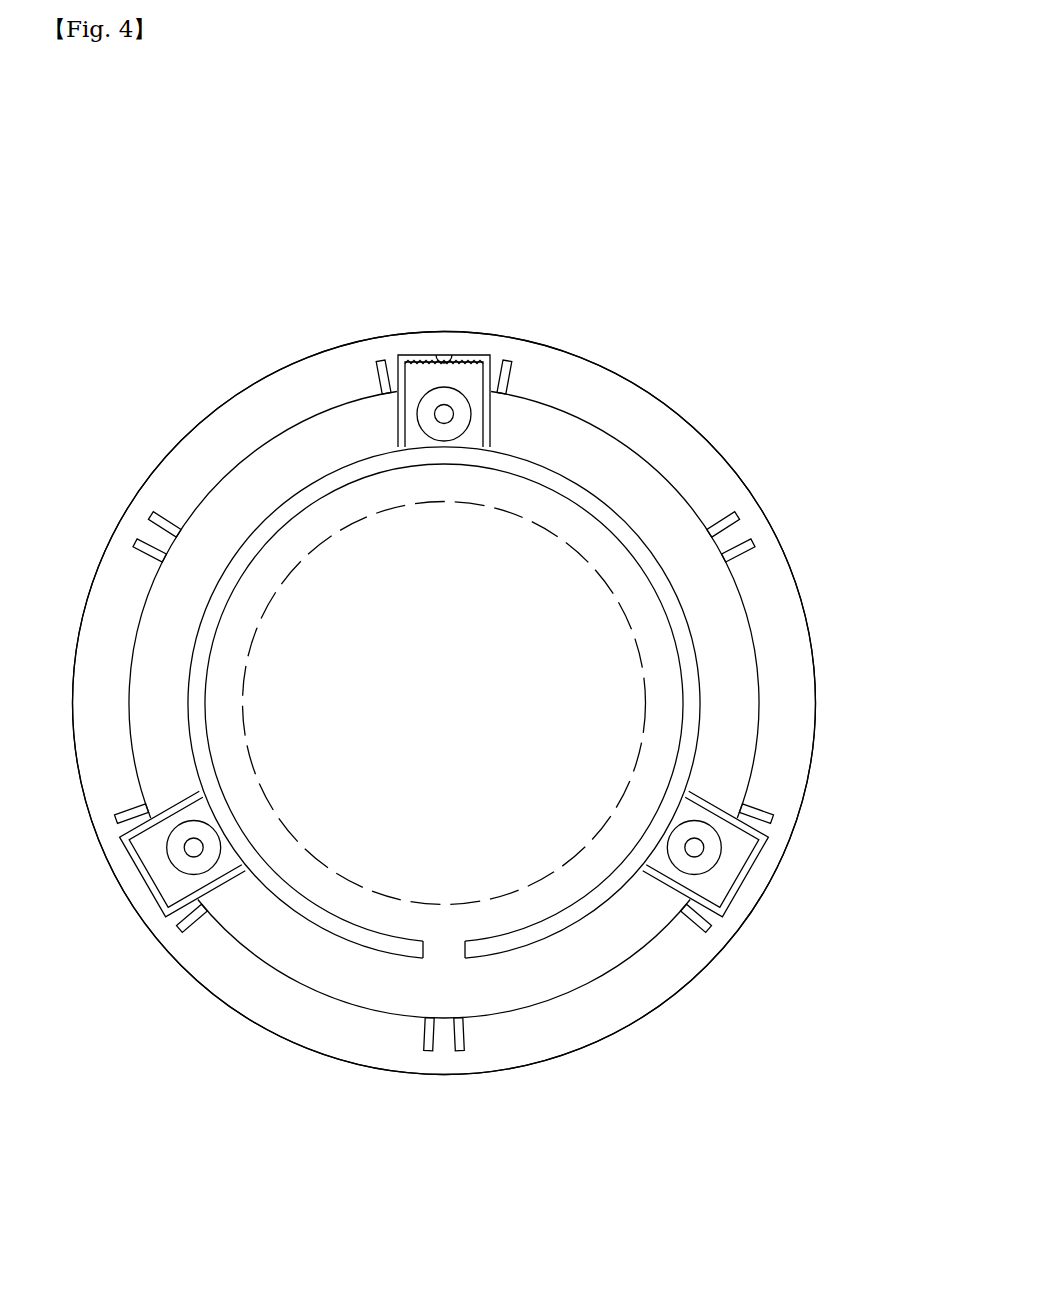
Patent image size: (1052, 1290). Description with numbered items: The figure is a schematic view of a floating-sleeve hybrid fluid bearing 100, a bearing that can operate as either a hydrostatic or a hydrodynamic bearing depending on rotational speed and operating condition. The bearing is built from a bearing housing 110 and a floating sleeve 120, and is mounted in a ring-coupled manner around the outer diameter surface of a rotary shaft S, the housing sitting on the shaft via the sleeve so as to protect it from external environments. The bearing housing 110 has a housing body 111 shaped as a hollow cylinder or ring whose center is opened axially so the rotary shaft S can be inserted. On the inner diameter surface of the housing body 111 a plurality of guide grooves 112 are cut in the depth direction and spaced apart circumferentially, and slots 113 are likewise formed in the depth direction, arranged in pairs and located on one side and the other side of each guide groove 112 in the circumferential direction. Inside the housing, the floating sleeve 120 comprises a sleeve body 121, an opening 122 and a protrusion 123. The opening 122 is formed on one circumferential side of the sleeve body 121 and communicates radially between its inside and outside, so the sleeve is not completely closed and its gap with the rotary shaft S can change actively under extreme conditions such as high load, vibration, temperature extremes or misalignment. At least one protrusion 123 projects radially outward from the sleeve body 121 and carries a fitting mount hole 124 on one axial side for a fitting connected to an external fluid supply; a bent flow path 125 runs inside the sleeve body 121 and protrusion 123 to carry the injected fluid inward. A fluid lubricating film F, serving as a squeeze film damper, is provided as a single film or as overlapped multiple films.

The floating-sleeve hybrid fluid bearing 100 is at (797, 128).
The bearing housing 110 is at (568, 282).
The housing body 111 is at (695, 450).
The guide groove 112 is at (455, 364).
The slot 113 is at (740, 555).
The floating sleeve 120 is at (241, 582).
The sleeve body 121 is at (548, 478).
The opening 122 is at (440, 950).
The protrusion 123 is at (740, 843).
The fitting mount hole 124 is at (714, 866).
The flow path 125 is at (704, 848).
The rotary shaft S is at (526, 848).
The fluid lubricating film F is at (157, 697).